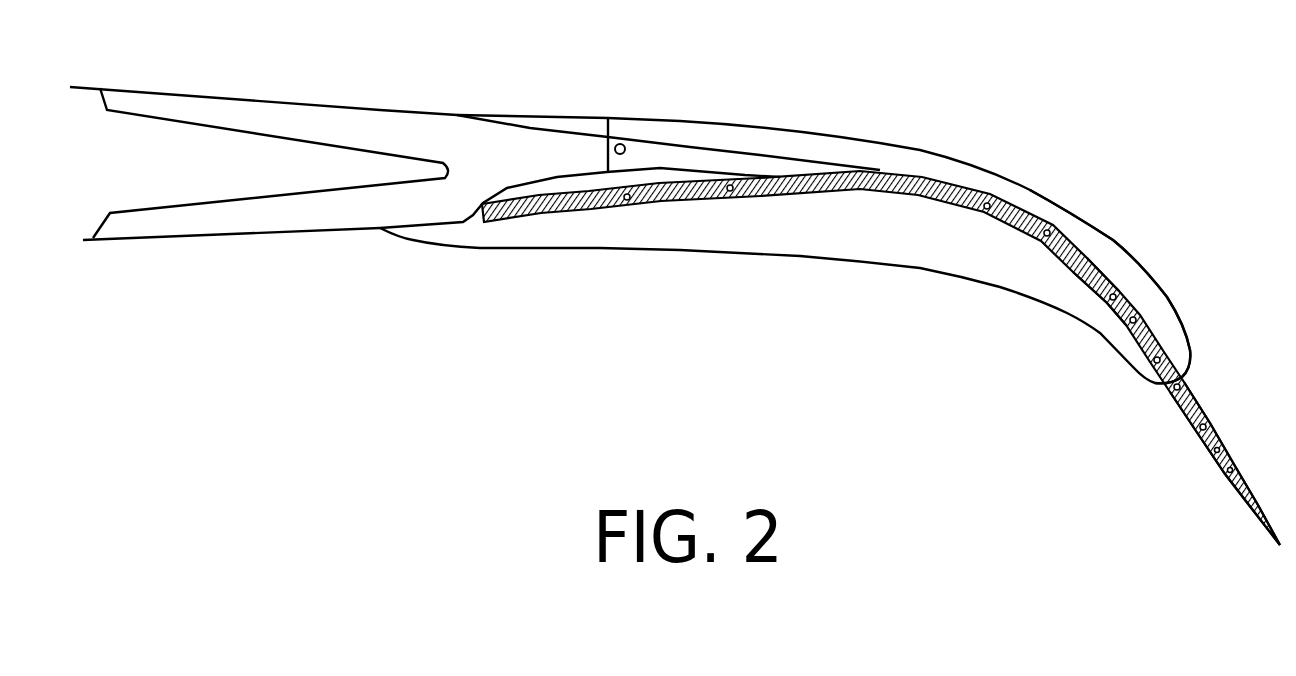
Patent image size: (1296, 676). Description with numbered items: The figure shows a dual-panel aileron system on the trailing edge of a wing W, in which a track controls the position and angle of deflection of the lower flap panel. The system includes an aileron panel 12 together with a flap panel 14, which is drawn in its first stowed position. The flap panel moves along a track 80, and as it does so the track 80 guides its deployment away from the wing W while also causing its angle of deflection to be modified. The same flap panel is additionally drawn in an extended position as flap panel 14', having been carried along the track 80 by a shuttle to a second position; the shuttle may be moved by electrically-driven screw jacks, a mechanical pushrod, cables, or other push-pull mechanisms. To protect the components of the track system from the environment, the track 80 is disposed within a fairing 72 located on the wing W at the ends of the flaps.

The wing W is at (417, 132).
The aileron panel 12 is at (747, 157).
The flap panel 14 is at (881, 358).
The flap panel in extended position 14' is at (1225, 458).
The fairing 72 is at (1037, 190).
The track 80 is at (1097, 268).